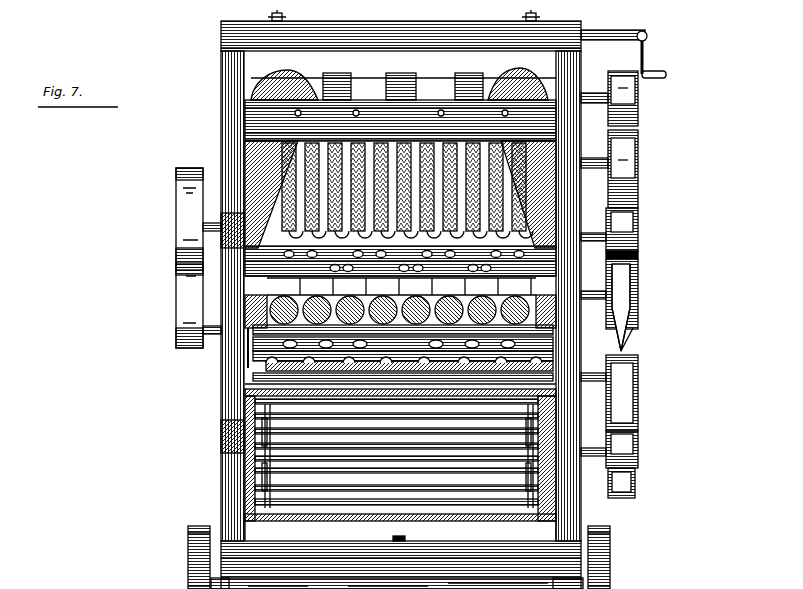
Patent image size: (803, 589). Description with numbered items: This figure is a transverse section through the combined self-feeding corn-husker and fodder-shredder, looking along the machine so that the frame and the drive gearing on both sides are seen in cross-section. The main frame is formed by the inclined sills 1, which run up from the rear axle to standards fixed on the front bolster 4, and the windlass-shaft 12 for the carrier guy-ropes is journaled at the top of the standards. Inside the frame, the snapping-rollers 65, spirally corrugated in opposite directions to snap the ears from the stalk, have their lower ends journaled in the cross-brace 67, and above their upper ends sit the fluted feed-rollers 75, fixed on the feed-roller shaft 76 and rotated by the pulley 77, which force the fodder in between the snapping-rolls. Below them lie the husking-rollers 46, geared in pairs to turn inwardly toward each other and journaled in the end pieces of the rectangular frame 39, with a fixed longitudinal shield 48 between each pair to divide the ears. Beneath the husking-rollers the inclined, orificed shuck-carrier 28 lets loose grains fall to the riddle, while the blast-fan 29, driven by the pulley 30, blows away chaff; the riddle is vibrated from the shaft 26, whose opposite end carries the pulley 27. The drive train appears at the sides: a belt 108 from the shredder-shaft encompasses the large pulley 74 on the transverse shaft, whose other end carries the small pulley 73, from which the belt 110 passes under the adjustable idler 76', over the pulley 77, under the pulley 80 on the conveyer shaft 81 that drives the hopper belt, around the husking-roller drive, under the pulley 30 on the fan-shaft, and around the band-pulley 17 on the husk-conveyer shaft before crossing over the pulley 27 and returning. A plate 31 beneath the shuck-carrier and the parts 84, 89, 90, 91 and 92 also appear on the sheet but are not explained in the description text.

The inclined sills 1 is at (212, 432).
The front bolster 4 is at (475, 533).
The windlass-shaft 12 is at (623, 45).
The band-pulley 17 is at (630, 408).
The shaft 26 is at (585, 292).
The pulley 27 is at (630, 307).
The shuck-carrier 28 is at (403, 362).
The blast-fan 29 is at (445, 405).
The pulley 30 is at (630, 440).
The plate 31 is at (545, 340).
The rectangular frame 39 is at (545, 310).
The husking-roller 46 is at (245, 322).
The longitudinal shield 48 is at (240, 328).
The snapping-roller 65 is at (285, 170).
The cross-brace 67 is at (548, 262).
The small pulley 73 is at (630, 246).
The large pulley 74 is at (168, 197).
The fluted feed-roller 75 is at (332, 75).
The feed-roller shaft 76 is at (594, 108).
The adjustable idler 76' is at (630, 229).
The pulley 77 is at (630, 98).
The pulley 80 is at (594, 174).
The shaft 81 is at (625, 142).
The bottom bar 84 is at (498, 586).
The bottom bar 89 is at (388, 587).
The bottom bar 90 is at (278, 587).
The left wheel 91 is at (164, 557).
The right wheel 92 is at (619, 557).
The belt 108 is at (168, 268).
The belt 110 is at (614, 324).